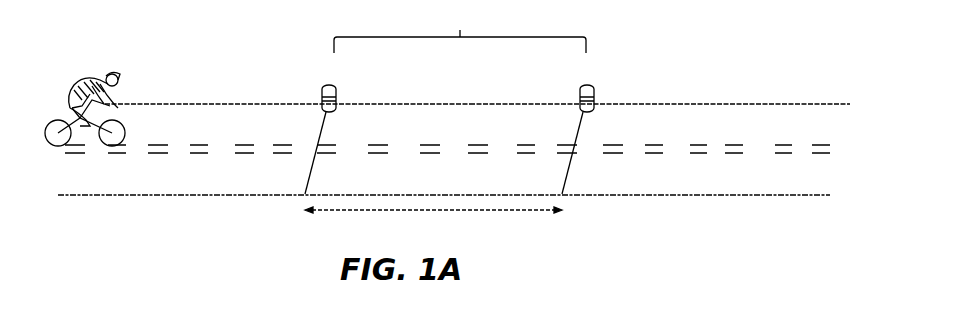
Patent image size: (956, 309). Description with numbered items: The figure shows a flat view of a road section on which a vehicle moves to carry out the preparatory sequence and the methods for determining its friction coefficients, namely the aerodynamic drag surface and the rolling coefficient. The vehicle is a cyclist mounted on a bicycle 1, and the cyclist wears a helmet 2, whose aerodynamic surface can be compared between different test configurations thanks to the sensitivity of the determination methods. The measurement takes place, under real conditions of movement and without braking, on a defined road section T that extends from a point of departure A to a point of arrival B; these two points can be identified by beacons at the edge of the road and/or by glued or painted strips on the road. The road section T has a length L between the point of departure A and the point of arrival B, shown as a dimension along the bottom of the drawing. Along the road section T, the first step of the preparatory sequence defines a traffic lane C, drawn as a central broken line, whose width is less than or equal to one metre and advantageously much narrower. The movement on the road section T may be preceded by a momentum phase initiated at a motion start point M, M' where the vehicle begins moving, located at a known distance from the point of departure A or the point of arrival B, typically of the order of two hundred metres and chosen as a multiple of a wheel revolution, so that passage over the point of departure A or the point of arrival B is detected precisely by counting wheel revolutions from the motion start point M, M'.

The bicycle 1 is at (82, 77).
The helmet 2 is at (118, 68).
The motion start point M is at (287, 85).
The motion start point M' is at (660, 82).
The point of departure A is at (329, 87).
The point of arrival B is at (587, 87).
The road section T is at (460, 29).
The traffic lane C is at (387, 156).
The length L is at (433, 222).